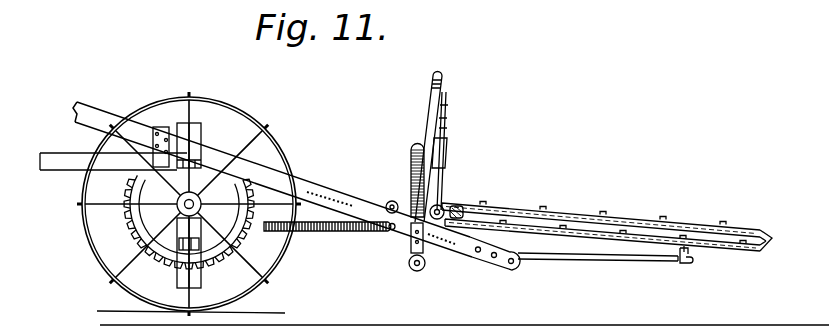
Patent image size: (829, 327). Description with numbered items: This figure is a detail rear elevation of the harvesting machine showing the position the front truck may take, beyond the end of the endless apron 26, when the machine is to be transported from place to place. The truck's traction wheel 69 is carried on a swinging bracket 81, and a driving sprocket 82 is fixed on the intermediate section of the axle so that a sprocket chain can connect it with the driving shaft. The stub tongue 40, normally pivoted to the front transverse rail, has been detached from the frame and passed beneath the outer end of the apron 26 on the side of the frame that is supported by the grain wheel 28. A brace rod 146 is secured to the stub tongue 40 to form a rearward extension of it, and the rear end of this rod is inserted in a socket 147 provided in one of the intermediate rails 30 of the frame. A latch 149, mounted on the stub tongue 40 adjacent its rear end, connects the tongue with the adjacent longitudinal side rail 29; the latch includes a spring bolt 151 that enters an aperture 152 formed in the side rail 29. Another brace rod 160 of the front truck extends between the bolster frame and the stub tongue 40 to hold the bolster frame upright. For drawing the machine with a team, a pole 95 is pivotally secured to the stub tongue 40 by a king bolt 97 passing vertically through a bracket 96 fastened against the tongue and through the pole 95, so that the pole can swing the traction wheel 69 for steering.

The traction wheel 69 is at (213, 103).
The driving sprocket 82 is at (237, 180).
The swinging bracket 81 is at (177, 238).
The king bolt 97 is at (157, 130).
The pole 95 is at (50, 155).
The stub tongue 40 is at (335, 197).
The brace rod 160 is at (338, 230).
The aperture 152 is at (412, 175).
The grain wheel 28 is at (441, 80).
The longitudinal side rail 29 is at (440, 206).
The latch 149 is at (442, 206).
The spring bolt 151 is at (443, 205).
The endless apron 26 is at (605, 222).
The bracket 96 is at (790, 227).
The brace rod 146 is at (567, 257).
The socket 147 is at (688, 258).
The intermediate rail 30 is at (685, 250).